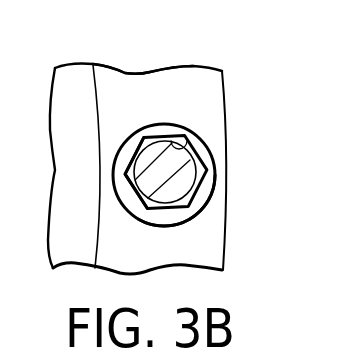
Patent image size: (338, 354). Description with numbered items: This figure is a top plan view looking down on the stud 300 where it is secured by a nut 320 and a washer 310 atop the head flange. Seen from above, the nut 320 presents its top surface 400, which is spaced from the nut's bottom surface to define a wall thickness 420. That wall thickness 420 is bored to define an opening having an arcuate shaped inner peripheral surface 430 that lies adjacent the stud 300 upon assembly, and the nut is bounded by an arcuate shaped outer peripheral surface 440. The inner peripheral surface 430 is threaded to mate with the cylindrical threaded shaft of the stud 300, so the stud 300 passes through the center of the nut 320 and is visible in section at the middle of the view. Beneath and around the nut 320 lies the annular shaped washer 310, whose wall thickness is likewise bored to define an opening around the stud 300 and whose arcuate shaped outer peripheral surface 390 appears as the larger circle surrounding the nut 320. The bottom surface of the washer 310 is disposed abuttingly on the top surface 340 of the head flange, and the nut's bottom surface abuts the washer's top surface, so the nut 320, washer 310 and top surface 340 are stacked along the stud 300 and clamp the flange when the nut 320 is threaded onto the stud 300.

The stud 300 is at (180, 180).
The washer 310 is at (210, 100).
The nut 320 is at (204, 206).
The top surface 340 is at (202, 250).
The outer peripheral surface 390 is at (173, 226).
The top surface 400 is at (150, 137).
The wall thickness 420 is at (138, 195).
The inner peripheral surface 430 is at (192, 130).
The outer peripheral surface 440 is at (130, 160).